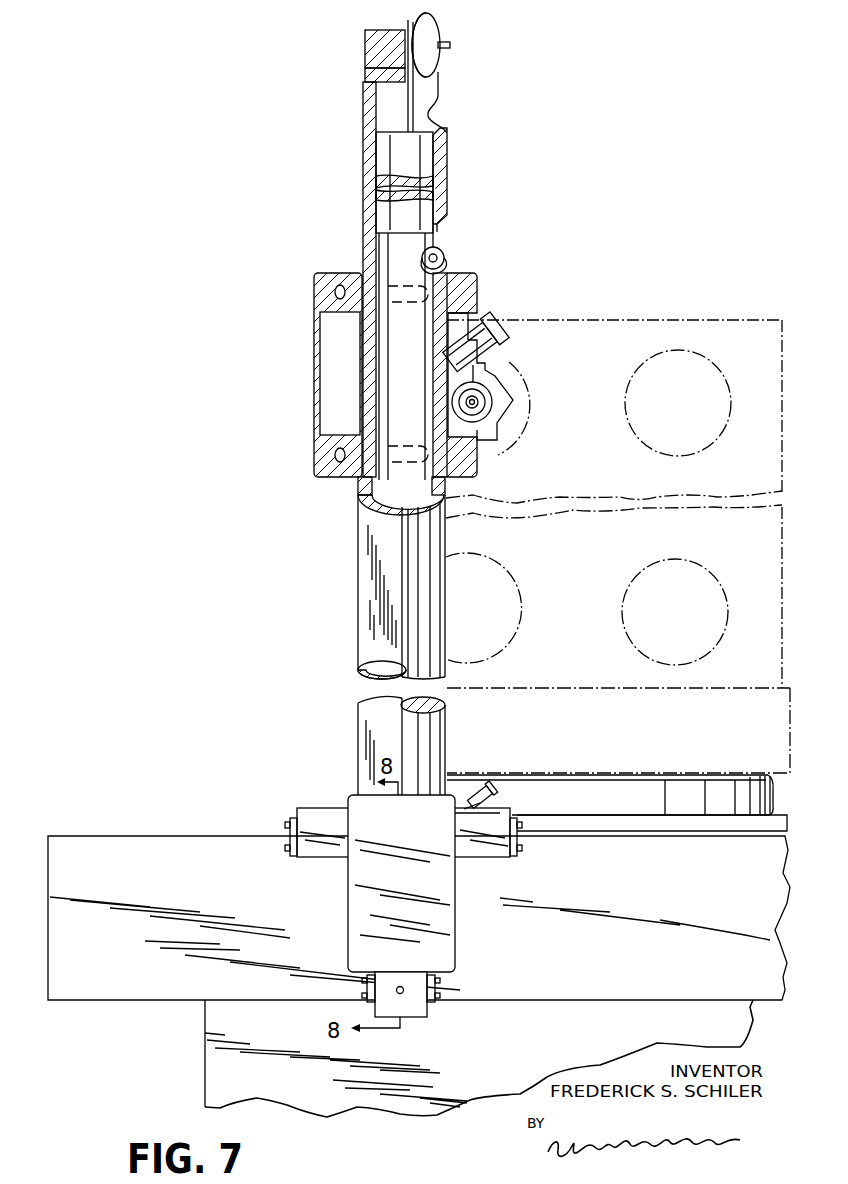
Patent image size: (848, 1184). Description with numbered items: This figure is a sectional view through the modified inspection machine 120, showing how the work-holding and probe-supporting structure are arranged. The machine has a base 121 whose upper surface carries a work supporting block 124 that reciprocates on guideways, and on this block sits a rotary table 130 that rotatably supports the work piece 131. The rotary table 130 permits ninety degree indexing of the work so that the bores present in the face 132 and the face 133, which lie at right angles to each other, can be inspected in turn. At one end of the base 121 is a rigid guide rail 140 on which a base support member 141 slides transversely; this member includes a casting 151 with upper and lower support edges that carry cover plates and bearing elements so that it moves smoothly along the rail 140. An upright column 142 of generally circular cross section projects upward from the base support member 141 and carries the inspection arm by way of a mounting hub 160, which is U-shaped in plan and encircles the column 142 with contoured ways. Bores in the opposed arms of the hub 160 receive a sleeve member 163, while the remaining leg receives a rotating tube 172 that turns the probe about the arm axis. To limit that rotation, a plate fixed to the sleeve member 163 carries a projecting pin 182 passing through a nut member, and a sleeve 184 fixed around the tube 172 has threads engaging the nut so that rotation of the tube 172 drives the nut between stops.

The modified inspection machine 120 is at (433, 1116).
The base 121 is at (222, 1073).
The work supporting block 124 is at (783, 835).
The rotary table 130 is at (565, 790).
The work piece 131 is at (597, 322).
The face 132 is at (718, 337).
The face 133 is at (782, 470).
The rigid guide rail 140 is at (90, 834).
The base support member 141 is at (367, 867).
The upright column 142 is at (357, 594).
The casting 151 is at (441, 952).
The mounting hub 160 is at (316, 401).
The sleeve member 163 is at (496, 396).
The rotating tube 172 is at (488, 407).
The projecting pin 182 is at (488, 386).
The sleeve 184 is at (493, 391).